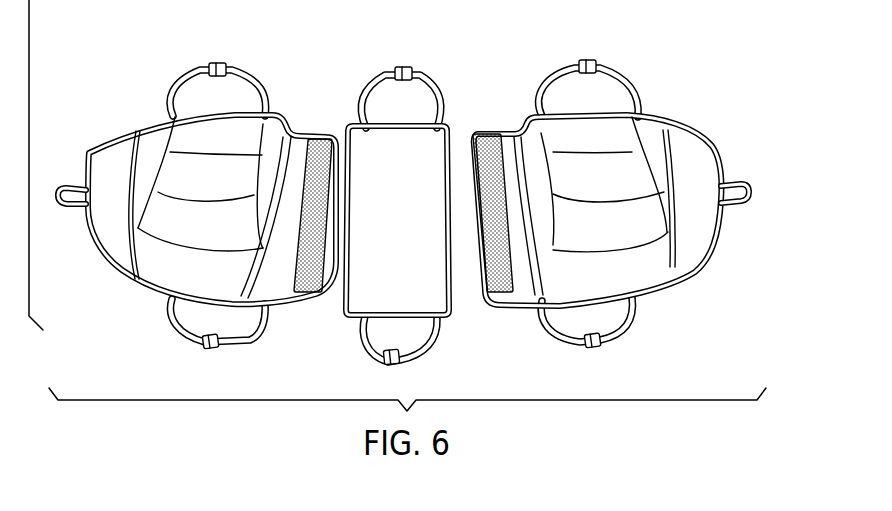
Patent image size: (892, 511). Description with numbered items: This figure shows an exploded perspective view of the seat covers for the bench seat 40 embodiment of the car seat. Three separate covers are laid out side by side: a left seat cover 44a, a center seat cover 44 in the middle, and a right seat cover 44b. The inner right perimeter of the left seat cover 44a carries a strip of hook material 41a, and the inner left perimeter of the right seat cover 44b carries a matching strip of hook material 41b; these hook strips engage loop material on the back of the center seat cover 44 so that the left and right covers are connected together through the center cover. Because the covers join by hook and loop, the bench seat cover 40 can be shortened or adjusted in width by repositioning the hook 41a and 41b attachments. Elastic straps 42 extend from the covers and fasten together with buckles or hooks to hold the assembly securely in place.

The bench seat 40 is at (403, 188).
The hook material 41a is at (330, 57).
The hook material 41b is at (490, 158).
The elastic straps 42 is at (362, 342).
The center seat cover 44 is at (428, 157).
The left seat cover 44a is at (158, 142).
The right seat cover 44b is at (647, 137).